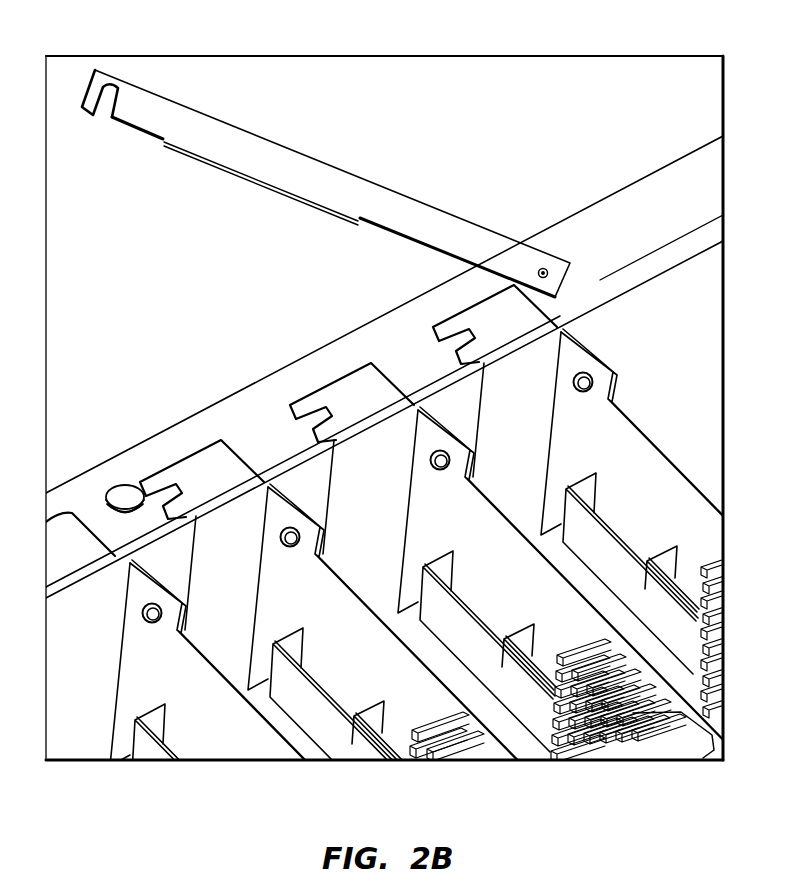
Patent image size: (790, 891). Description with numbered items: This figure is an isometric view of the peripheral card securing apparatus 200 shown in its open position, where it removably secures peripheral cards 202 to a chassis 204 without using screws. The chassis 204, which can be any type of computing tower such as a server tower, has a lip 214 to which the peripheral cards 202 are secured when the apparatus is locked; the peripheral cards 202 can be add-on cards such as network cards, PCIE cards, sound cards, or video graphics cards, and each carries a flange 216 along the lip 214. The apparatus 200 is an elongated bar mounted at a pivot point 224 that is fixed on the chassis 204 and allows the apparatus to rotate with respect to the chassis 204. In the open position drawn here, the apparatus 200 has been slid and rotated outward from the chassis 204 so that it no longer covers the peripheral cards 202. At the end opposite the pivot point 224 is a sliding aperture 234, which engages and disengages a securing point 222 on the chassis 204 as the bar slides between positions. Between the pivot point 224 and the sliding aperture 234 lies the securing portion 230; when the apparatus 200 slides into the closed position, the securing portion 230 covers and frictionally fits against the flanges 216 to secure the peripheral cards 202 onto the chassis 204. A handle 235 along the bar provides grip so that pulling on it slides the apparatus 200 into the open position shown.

The peripheral card securing apparatus 200 is at (353, 185).
The peripheral card 202 is at (509, 282).
The chassis 204 is at (651, 246).
The lip 214 is at (612, 242).
The flange 216 is at (219, 455).
The securing point 222 is at (125, 497).
The pivot point 224 is at (541, 267).
The securing portion 230 is at (288, 163).
The sliding aperture 234 is at (88, 100).
The handle 235 is at (205, 160).